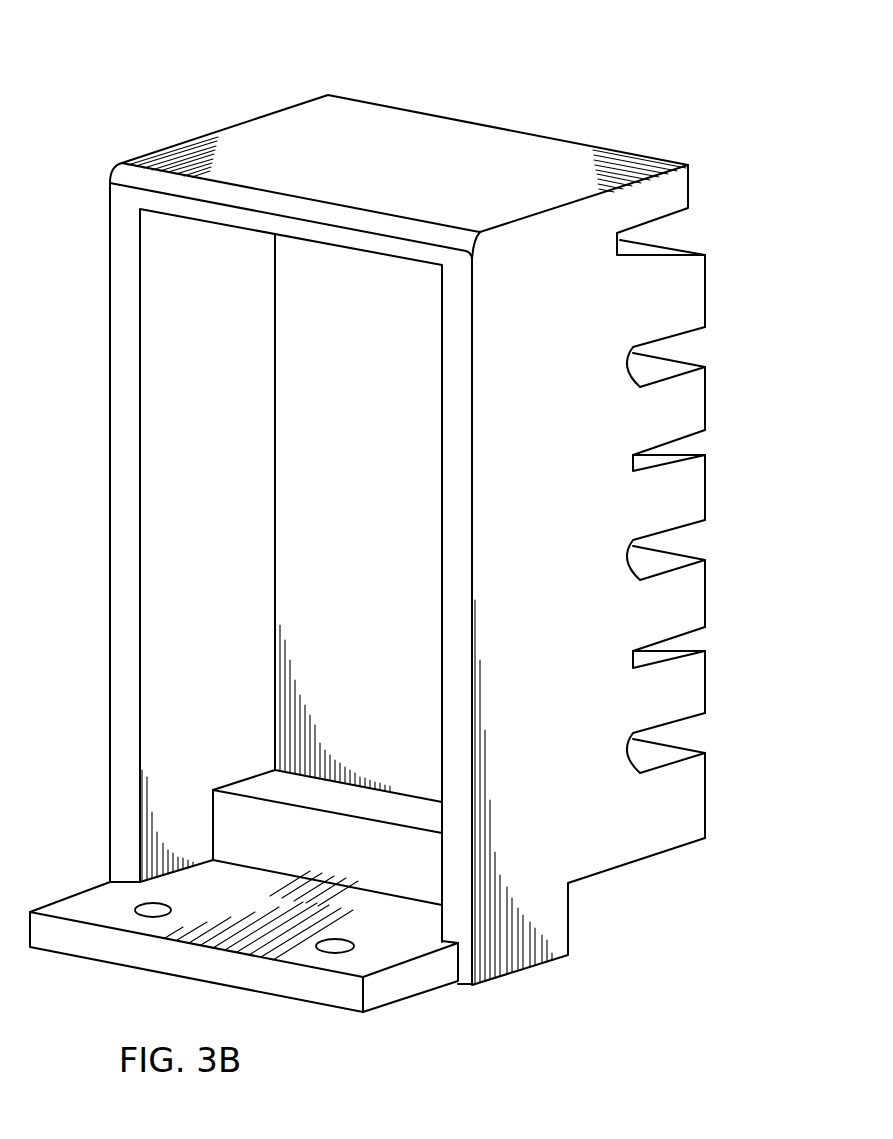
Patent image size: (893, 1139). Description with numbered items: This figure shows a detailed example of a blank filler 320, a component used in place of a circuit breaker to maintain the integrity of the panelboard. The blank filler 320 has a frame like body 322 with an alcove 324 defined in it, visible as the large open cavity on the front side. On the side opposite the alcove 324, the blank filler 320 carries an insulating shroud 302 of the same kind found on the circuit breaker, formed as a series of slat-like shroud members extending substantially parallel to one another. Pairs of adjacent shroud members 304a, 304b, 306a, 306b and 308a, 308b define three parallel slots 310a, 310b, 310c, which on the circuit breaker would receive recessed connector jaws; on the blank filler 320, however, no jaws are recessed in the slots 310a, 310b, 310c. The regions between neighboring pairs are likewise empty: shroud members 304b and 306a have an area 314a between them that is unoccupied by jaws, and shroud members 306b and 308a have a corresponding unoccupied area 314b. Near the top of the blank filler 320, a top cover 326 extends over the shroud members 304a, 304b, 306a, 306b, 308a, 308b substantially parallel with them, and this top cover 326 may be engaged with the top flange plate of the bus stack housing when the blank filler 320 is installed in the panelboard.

The blank filler 320 is at (128, 55).
The insulating shroud 302 is at (482, 135).
The frame like body 322 is at (108, 536).
The alcove 324 is at (301, 572).
The top cover 326 is at (694, 187).
The shroud member 304a is at (705, 292).
The shroud member 304b is at (705, 398).
The shroud member 306a is at (705, 488).
The shroud member 306b is at (705, 595).
The shroud member 308a is at (705, 683).
The shroud member 308b is at (705, 797).
The slot 310a is at (696, 348).
The slot 310b is at (696, 541).
The slot 310c is at (696, 735).
The area 314a is at (633, 465).
The area 314b is at (633, 658).